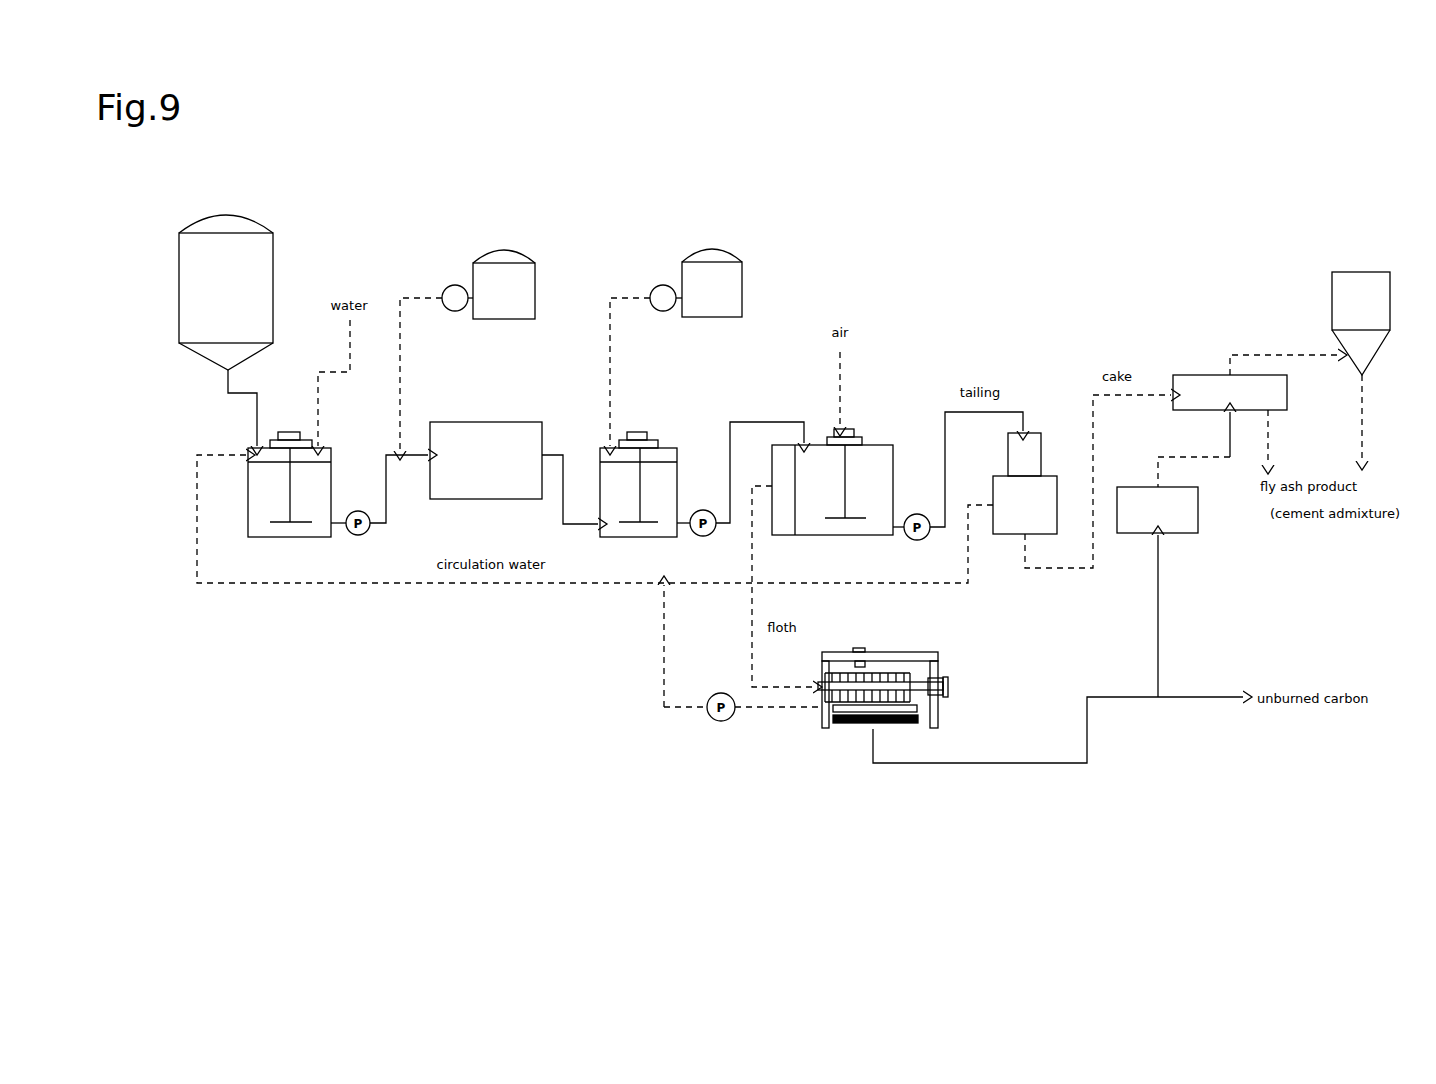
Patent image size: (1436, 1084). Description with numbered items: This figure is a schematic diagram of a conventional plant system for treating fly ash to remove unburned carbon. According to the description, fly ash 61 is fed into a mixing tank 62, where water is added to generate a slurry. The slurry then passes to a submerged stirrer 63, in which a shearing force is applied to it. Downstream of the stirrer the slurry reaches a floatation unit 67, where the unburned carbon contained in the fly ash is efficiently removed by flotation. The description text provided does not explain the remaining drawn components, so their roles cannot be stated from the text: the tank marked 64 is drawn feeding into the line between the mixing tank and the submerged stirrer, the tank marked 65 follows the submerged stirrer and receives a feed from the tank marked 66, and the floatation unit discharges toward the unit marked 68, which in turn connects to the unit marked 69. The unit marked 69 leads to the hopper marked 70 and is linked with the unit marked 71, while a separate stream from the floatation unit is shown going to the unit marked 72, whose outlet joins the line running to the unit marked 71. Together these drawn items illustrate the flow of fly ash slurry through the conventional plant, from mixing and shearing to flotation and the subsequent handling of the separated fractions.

The fly ash 61 is at (179, 290).
The mixing tank 62 is at (277, 537).
The submerged stirrer 63 is at (484, 422).
The light oil tank 64 is at (535, 285).
The flother mixing tank 65 is at (665, 440).
The flother tank 66 is at (742, 287).
The floatation unit 67 is at (868, 445).
The tailing dewatering device 68 is at (1041, 455).
The cake dryer 69 is at (1198, 375).
The fly ash product hopper 70 is at (1332, 300).
The hot gas generator 71 is at (1198, 508).
The filter press 72 is at (948, 690).